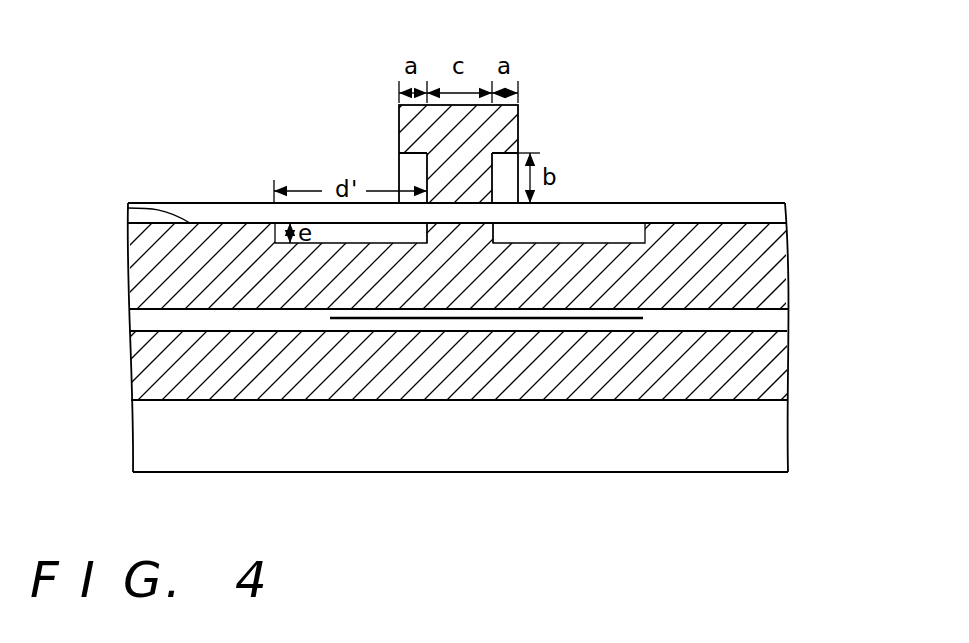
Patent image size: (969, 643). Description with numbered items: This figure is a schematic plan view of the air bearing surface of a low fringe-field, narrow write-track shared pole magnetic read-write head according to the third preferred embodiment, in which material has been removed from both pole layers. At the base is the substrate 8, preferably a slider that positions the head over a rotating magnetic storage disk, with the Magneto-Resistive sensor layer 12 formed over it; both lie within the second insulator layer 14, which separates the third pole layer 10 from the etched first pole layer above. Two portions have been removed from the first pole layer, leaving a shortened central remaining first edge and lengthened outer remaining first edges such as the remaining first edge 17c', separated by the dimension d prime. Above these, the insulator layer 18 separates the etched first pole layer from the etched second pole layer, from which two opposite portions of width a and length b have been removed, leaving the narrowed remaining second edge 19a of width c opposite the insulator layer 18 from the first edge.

The substrate 8 is at (148, 440).
The third pole layer 10 is at (152, 366).
The Magneto-Resistive (MR) sensor layer 12 is at (543, 320).
The second insulator layer 14 is at (757, 319).
The remaining first edge 17c' is at (596, 373).
The insulator layer 18 is at (757, 210).
The remaining second edge 19a is at (462, 200).